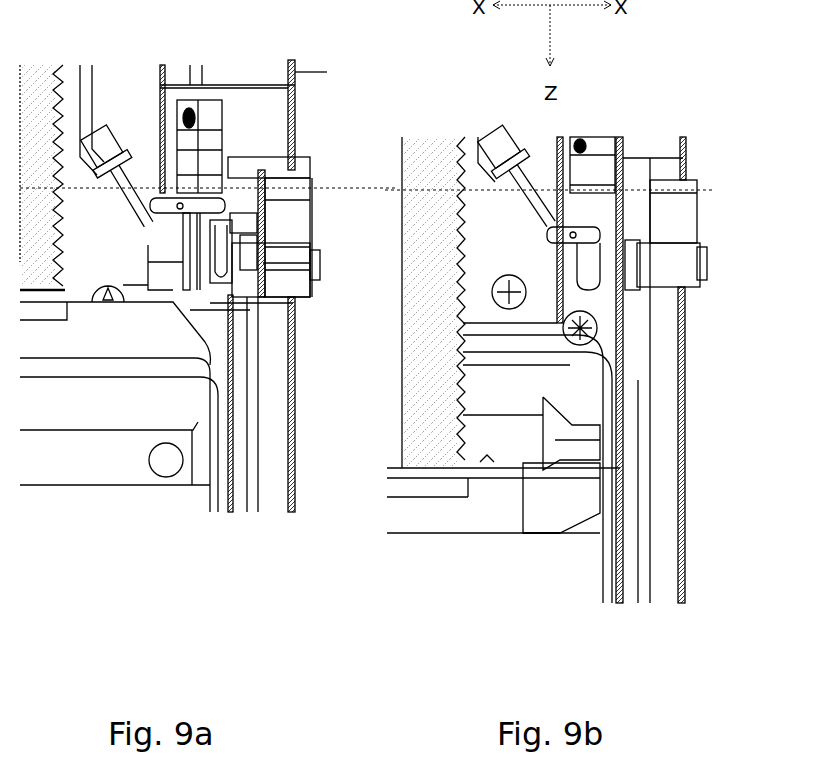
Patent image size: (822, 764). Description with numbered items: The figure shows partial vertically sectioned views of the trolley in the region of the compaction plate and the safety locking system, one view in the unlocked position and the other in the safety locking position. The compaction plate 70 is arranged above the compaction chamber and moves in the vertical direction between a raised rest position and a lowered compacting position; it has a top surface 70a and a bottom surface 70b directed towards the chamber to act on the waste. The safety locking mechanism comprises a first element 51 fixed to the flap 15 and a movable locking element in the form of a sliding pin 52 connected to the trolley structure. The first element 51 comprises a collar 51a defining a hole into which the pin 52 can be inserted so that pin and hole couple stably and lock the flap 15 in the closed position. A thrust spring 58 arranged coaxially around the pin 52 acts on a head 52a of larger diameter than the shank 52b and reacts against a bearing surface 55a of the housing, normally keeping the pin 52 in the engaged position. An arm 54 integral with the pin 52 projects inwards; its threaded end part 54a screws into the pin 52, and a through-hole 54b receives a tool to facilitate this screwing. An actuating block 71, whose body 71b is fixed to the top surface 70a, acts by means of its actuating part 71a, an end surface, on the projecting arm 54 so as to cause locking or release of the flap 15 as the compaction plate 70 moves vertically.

In FIG. 9A, the flap 15 is at (257, 380).
In FIG. 9A, the first element 51 is at (250, 327).
In FIG. 9B, the first element 51 is at (647, 307).
In FIG. 9A, the collar 51a is at (213, 310).
In FIG. 9B, the collar 51a is at (613, 300).
In FIG. 9B, the sliding pin 52 is at (548, 266).
In FIG. 9A, the head 52a is at (297, 260).
In FIG. 9B, the head 52a is at (670, 263).
In FIG. 9A, the shank 52b is at (150, 238).
In FIG. 9B, the shank 52b is at (665, 222).
In FIG. 9A, the arm 54 is at (232, 170).
In FIG. 9A, the end part 54a is at (245, 215).
In FIG. 9A, the through-hole 54b is at (183, 185).
In FIG. 9A, the bearing surface 55a is at (262, 235).
In FIG. 9A, the thrust spring 58 is at (300, 258).
In FIG. 9B, the compaction plate 70 is at (520, 515).
In FIG. 9B, the top surface 70a is at (485, 462).
In FIG. 9B, the bottom surface 70b is at (507, 533).
In FIG. 9A, the actuating block 71 is at (150, 262).
In FIG. 9B, the actuating part 71a is at (560, 417).
In FIG. 9B, the body 71b is at (569, 463).